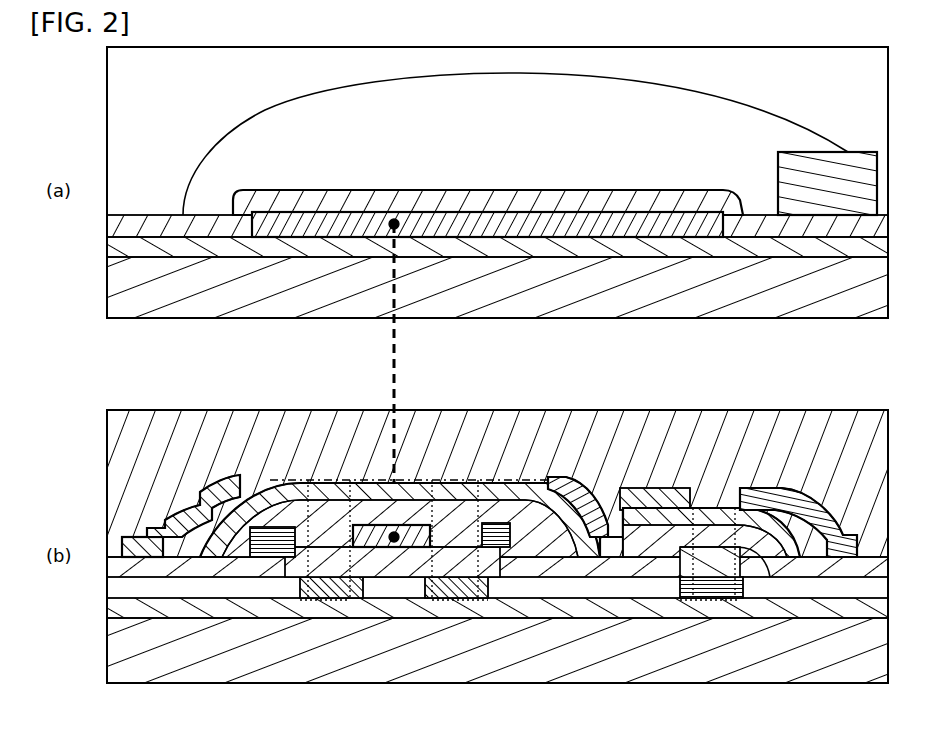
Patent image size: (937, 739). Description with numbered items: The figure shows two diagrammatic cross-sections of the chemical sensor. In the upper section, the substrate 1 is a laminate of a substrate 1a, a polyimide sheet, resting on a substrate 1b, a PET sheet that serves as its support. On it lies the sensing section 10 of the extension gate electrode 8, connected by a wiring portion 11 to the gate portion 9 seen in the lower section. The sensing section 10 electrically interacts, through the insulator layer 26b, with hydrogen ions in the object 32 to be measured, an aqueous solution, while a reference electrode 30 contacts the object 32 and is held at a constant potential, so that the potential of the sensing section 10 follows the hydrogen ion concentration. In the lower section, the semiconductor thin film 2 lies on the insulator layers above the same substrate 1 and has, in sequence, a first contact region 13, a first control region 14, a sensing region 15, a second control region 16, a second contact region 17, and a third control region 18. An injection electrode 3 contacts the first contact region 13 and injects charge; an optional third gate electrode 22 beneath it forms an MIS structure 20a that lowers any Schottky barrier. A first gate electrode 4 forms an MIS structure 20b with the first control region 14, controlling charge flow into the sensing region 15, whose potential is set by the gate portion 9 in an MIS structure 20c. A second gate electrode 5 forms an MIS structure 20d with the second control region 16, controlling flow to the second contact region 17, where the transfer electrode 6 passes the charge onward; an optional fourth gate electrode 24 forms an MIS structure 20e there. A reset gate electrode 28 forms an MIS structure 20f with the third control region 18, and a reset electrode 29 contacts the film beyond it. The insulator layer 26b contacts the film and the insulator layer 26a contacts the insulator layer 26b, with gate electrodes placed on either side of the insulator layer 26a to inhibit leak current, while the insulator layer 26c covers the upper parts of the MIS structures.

The substrate 1 is at (501, 483).
The substrate 1a is at (145, 247).
The substrate 1b is at (762, 283).
The semiconductor thin film 2 is at (143, 534).
The injection electrode 3 is at (200, 505).
The first gate electrode 4 is at (322, 600).
The second gate electrode 5 is at (455, 600).
The transfer electrode 6 is at (588, 480).
The extension gate electrode 8 is at (497, 457).
The gate portion 9 is at (413, 478).
The sensing section 10 is at (510, 228).
The wiring portion 11 is at (394, 343).
The first contact region 13 is at (240, 478).
The first control region 14 is at (327, 478).
The sensing region 15 is at (378, 478).
The second control region 16 is at (455, 478).
The second contact region 17 is at (555, 478).
The third control region 18 is at (717, 490).
The MIS structure 20a is at (237, 580).
The MIS structure 20b is at (340, 600).
The MIS structure 20c is at (383, 580).
The MIS structure 20d is at (476, 600).
The MIS structure 20e is at (545, 598).
The MIS structure 20f is at (728, 602).
The third gate electrode 22 is at (272, 585).
The fourth gate electrode 24 is at (528, 585).
The insulator layer 26a is at (183, 580).
The insulator layer 26b is at (680, 200).
The insulator layer 26c is at (826, 435).
The reset gate electrode 28 is at (712, 600).
The reset electrode 29 is at (778, 480).
The reference electrode 30 is at (828, 190).
The object to be measured 32 is at (527, 118).